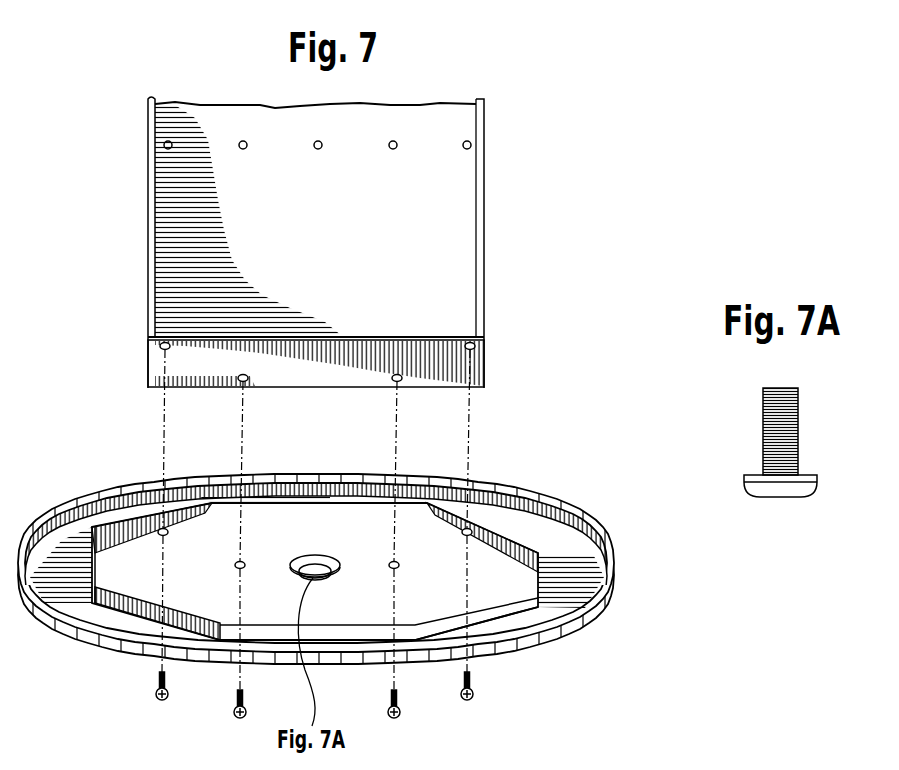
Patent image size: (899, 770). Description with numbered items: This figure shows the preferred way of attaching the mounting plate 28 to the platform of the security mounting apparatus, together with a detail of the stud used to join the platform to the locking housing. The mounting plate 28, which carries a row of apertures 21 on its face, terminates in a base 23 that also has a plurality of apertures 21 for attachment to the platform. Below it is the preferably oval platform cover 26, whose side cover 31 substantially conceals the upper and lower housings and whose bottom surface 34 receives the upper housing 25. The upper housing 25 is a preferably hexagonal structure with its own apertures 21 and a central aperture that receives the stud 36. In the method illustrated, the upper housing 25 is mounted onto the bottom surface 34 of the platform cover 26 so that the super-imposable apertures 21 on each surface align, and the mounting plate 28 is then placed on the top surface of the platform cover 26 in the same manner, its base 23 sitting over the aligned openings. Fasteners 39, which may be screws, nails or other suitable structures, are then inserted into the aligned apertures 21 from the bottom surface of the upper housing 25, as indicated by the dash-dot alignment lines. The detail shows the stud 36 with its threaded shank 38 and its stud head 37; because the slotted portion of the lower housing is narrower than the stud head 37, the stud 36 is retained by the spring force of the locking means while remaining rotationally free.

In FIG. 7, the mounting plate 28 is at (494, 117).
In FIG. 7, the base 23 is at (440, 366).
In FIG. 7, the platform cover 26 is at (355, 546).
In FIG. 7, the side cover 31 is at (614, 554).
In FIG. 7, the bottom surface 34 is at (577, 576).
In FIG. 7, the apertures 21 is at (312, 566).
In FIG. 7, the upper housing 25 is at (90, 594).
In FIG. 7, the fasteners 39 is at (476, 688).
In FIG. 7A, the stud 36 is at (753, 432).
In FIG. 7A, the threaded shank 38 is at (762, 441).
In FIG. 7A, the stud head 37 is at (745, 488).